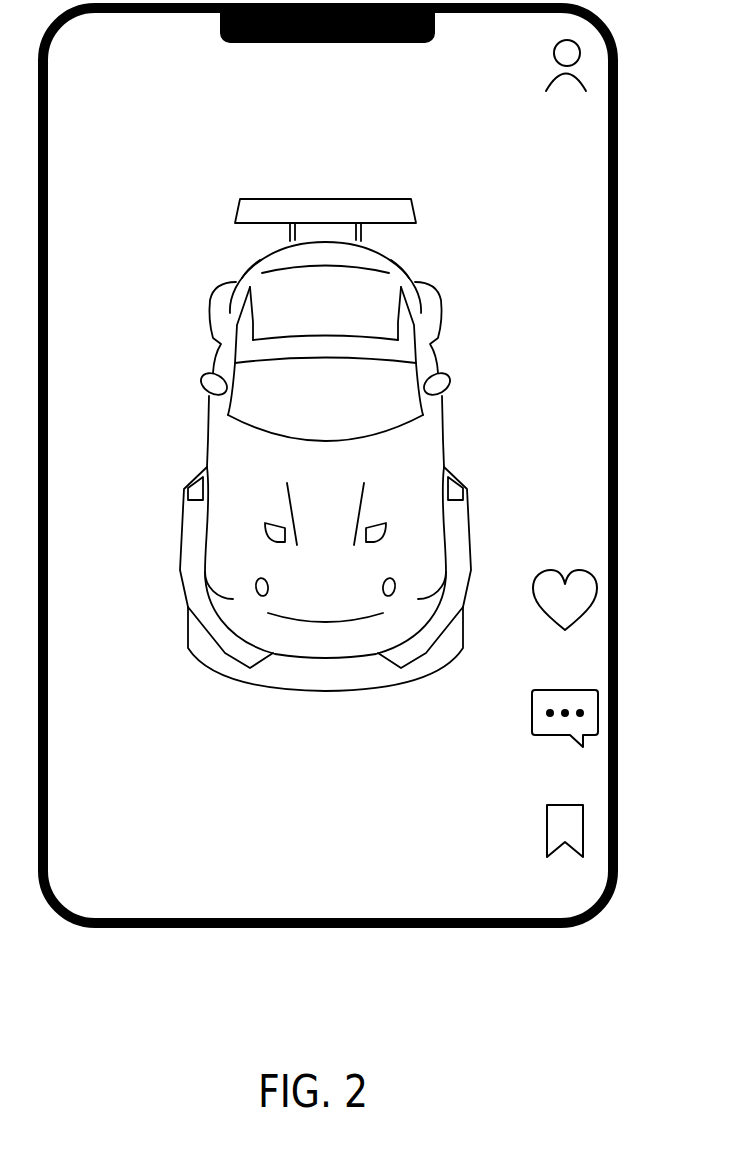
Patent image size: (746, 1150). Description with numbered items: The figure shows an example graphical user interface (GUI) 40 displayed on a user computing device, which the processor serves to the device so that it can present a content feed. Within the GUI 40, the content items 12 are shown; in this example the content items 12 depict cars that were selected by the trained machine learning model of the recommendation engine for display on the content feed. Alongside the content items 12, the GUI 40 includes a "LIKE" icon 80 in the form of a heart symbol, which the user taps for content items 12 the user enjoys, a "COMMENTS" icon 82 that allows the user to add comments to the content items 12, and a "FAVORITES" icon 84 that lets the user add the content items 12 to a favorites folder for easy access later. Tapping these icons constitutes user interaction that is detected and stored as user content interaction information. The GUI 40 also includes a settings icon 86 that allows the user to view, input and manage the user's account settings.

The content items 12 is at (350, 182).
The graphical user interface (GUI) 40 is at (350, 81).
The "LIKE" icon 80 is at (594, 559).
The "COMMENTS" icon 82 is at (594, 672).
The "FAVORITES" icon 84 is at (594, 790).
The settings icon 86 is at (589, 57).